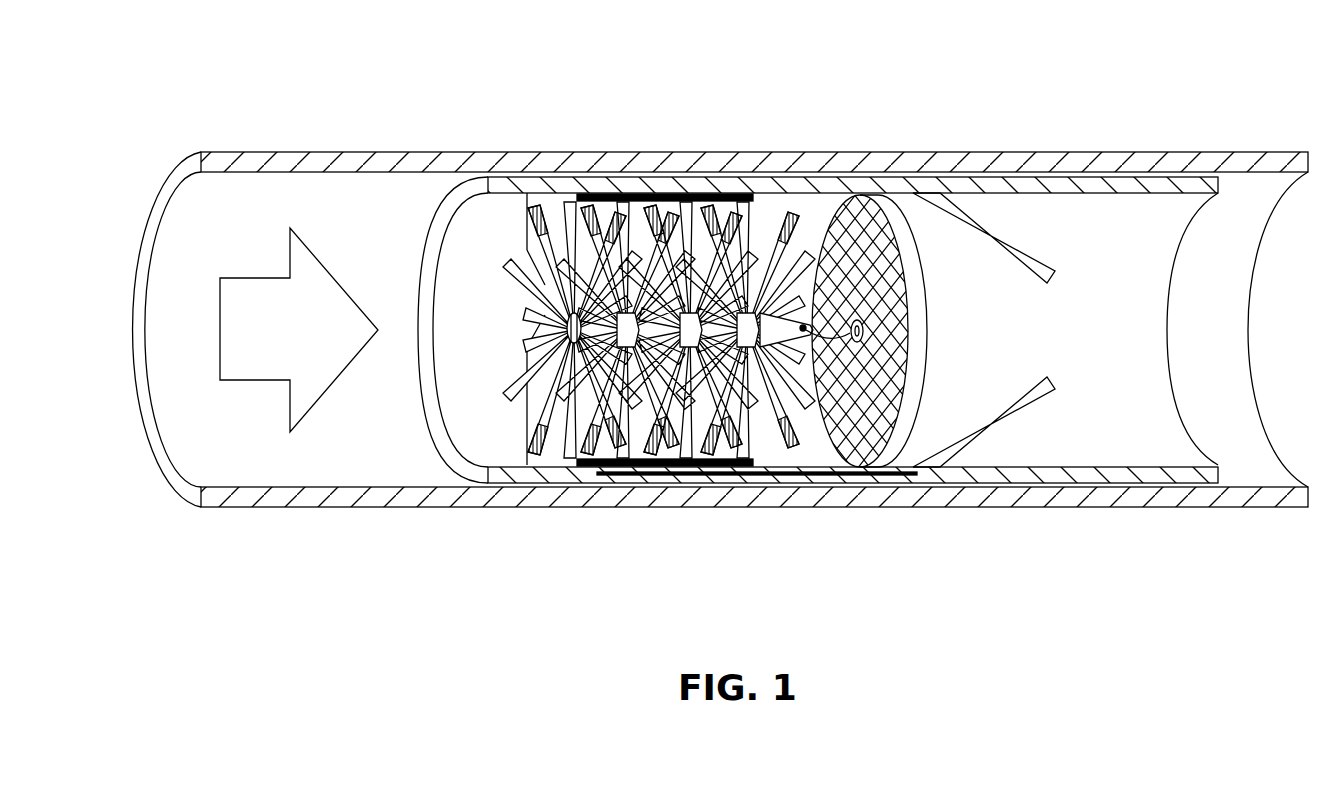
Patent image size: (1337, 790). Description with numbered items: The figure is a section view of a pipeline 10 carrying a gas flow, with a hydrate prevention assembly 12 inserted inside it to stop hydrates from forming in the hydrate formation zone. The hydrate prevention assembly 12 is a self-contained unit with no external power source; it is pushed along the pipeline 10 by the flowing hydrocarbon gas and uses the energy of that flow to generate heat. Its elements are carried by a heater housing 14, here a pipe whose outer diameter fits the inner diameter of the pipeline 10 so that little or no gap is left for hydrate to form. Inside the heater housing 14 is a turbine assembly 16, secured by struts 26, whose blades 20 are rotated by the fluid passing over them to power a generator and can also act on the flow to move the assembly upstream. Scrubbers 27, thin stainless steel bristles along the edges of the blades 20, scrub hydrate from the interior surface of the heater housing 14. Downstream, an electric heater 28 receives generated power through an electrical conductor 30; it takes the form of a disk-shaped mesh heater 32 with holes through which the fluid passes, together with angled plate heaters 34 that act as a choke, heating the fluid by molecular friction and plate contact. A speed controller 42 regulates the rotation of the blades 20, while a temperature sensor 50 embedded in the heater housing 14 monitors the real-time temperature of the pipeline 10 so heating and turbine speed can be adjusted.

The pipeline 10 is at (938, 160).
The hydrate prevention assembly 12 is at (693, 124).
The heater housing 14 is at (827, 187).
The turbine assembly 16 is at (636, 301).
The blade 20 is at (547, 437).
The struts 26 is at (527, 228).
The scrubbers 27 is at (517, 196).
The electric heater 28 is at (876, 375).
The electrical conductor 30 is at (868, 465).
The mesh heater 32 is at (825, 455).
The plate heater 34 is at (1022, 248).
The speed controller 42 is at (528, 347).
The temperature sensor 50 is at (650, 476).